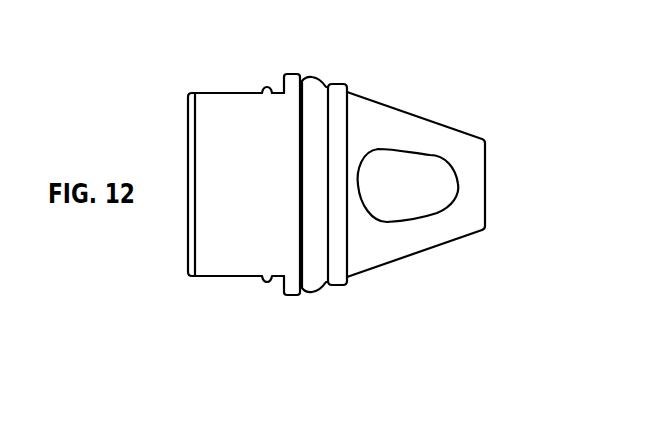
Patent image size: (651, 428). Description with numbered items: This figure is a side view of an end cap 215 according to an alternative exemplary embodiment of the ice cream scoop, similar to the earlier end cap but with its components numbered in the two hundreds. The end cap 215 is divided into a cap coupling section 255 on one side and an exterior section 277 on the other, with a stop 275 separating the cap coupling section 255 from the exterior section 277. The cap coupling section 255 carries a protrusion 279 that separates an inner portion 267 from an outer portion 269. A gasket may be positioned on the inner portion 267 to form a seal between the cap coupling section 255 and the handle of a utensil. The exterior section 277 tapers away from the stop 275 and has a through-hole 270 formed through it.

The cap coupling section 255 is at (210, 50).
The end cap 215 is at (396, 49).
The stop 275 is at (278, 81).
The inner portion 267 is at (210, 278).
The protrusion 279 is at (265, 282).
The outer portion 269 is at (290, 297).
The exterior section 277 is at (387, 268).
The through-hole 270 is at (429, 165).